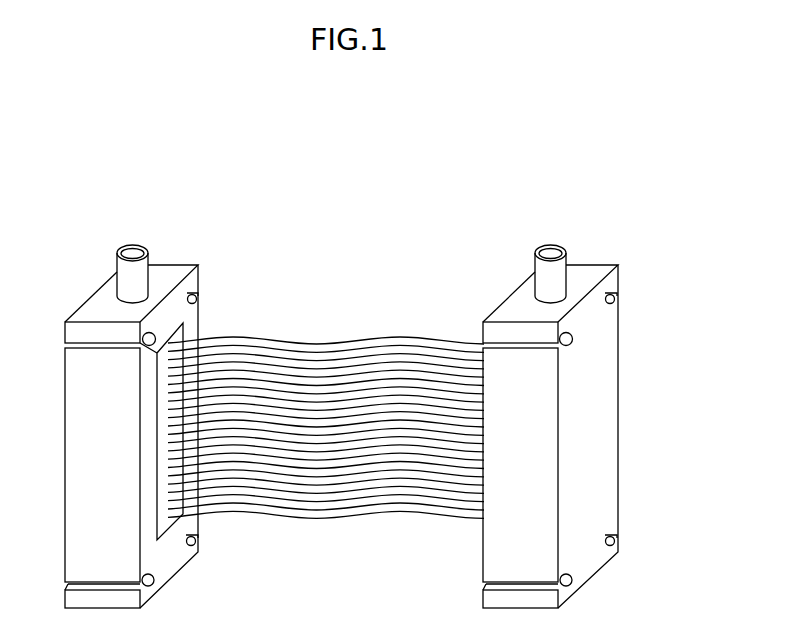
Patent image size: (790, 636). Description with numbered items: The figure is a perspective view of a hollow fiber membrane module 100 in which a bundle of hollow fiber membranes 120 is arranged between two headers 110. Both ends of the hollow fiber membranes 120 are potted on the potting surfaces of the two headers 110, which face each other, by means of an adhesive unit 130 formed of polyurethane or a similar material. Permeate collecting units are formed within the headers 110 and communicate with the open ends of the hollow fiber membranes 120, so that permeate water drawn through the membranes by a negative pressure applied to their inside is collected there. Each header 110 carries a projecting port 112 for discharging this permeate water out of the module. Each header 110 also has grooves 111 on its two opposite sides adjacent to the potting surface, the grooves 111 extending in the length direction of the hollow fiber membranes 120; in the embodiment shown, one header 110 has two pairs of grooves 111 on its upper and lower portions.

The hollow fiber membrane module 100 is at (681, 276).
The header 110 is at (163, 277).
The groove 111 is at (198, 295).
The projecting port 112 is at (117, 258).
The hollow fiber membranes 120 is at (283, 342).
The adhesive unit 130 is at (180, 336).